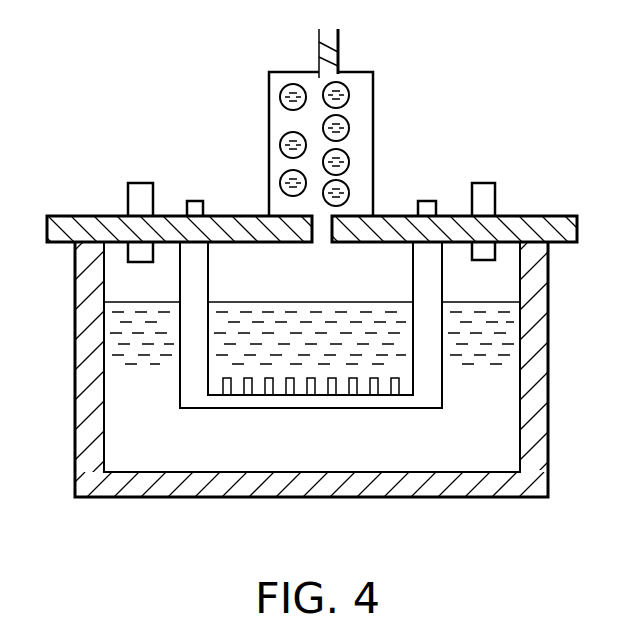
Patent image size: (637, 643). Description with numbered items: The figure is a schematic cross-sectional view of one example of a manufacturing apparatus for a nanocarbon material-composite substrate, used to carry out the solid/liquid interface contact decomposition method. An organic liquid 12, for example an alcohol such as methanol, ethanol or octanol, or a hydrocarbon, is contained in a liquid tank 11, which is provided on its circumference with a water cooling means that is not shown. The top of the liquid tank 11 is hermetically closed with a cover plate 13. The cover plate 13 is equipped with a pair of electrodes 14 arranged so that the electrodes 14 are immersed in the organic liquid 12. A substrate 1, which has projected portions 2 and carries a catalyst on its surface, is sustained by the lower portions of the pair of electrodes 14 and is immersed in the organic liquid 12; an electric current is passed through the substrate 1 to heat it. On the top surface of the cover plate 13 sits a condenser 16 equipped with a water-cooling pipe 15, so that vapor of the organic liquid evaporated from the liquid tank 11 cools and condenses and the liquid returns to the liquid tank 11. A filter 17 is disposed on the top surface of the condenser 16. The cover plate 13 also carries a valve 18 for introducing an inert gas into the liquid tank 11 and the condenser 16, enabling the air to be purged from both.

The substrate 1 is at (343, 409).
The projected portions 2 is at (268, 378).
The liquid tank 11 is at (535, 352).
The organic liquid 12 is at (118, 373).
The cover plate 13 is at (72, 222).
The electrodes 14 is at (195, 200).
The water-cooling pipe 15 is at (349, 125).
The condenser 16 is at (374, 160).
The filter 17 is at (340, 34).
The valve 18 is at (139, 181).